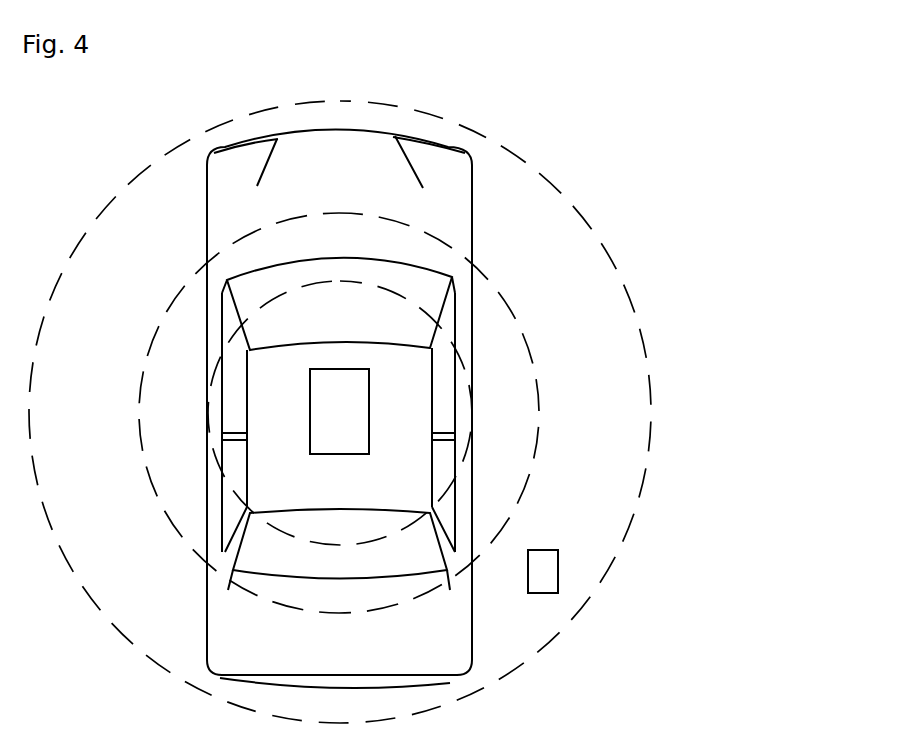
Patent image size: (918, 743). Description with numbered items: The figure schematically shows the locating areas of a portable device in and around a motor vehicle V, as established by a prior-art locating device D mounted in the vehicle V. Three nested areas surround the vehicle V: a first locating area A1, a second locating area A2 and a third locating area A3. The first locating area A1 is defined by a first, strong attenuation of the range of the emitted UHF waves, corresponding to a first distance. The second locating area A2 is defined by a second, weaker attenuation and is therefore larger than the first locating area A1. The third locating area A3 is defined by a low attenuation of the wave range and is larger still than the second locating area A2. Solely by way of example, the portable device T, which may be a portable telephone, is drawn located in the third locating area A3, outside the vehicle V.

The vehicle V is at (448, 183).
The first locating area A1 is at (413, 303).
The second locating area A2 is at (538, 393).
The third locating area A3 is at (640, 486).
The locating device D is at (323, 430).
The portable device T is at (556, 576).